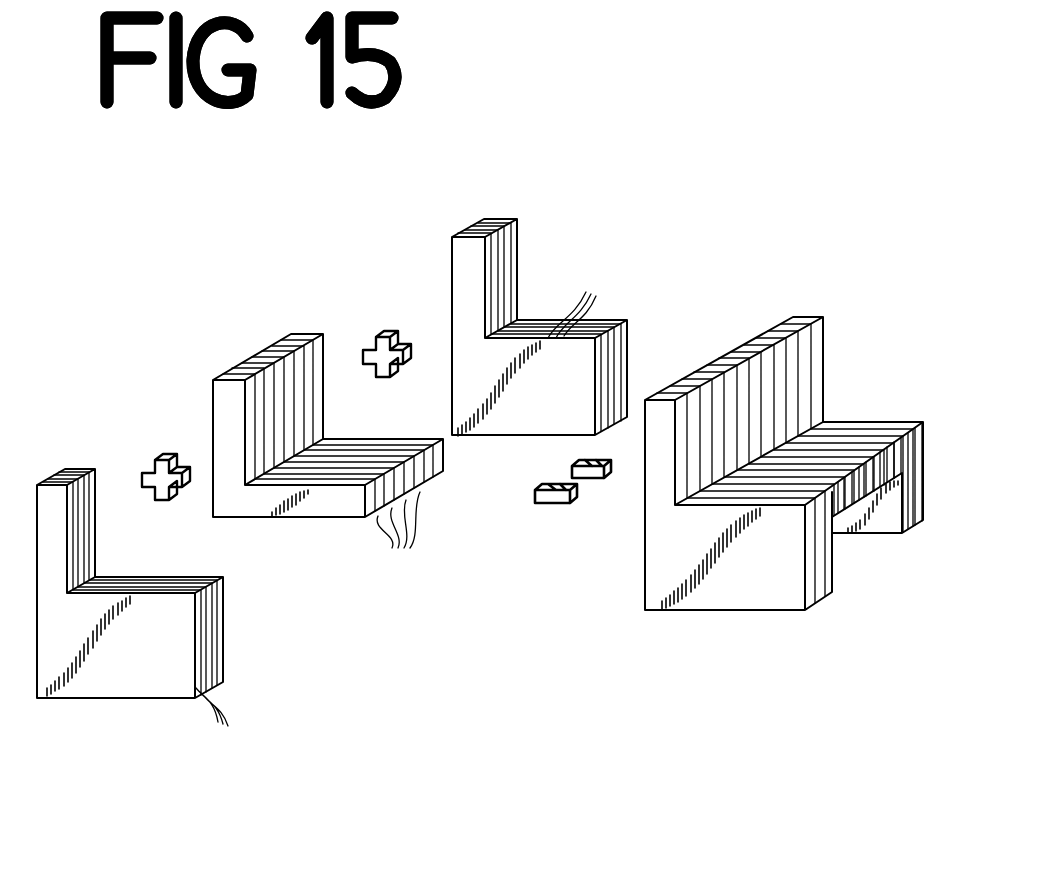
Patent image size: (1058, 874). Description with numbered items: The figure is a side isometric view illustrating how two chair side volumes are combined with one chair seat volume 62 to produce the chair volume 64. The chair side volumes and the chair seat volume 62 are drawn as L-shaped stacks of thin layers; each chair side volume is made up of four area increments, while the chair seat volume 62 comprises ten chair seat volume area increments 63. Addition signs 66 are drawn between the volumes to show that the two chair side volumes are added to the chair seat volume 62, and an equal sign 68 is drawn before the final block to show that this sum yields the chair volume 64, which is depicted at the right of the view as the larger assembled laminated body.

The chair seat volume 62 is at (210, 425).
The chair seat volume area increment 63 is at (396, 540).
The chair volume 64 is at (728, 612).
The addition sign 66 is at (140, 485).
The equal sign 68 is at (548, 505).